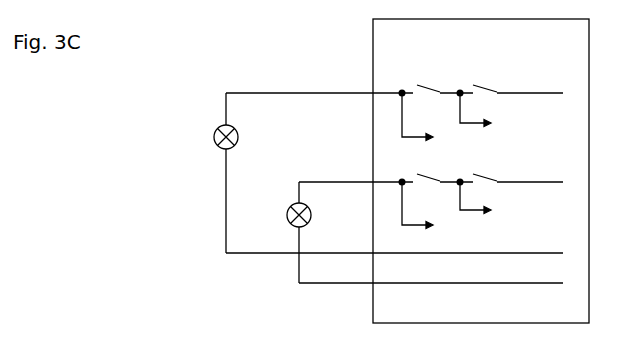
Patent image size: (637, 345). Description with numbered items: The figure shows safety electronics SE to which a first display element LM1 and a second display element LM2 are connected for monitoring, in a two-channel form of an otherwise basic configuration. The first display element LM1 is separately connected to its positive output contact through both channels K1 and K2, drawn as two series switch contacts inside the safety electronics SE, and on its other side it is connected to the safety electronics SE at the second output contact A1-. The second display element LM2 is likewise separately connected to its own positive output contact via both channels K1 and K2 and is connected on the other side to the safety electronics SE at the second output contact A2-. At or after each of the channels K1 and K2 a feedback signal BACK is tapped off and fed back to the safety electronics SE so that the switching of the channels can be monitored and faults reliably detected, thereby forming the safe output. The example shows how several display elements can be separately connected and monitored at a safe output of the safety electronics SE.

The safety electronics SE is at (481, 171).
The first display element LM1 is at (204, 173).
The second display element LM2 is at (276, 232).
The first channel K1 is at (440, 125).
The second channel K2 is at (511, 123).
The second output contact A1- is at (394, 266).
The second output contact A2- is at (431, 296).
The feedback signal BACK is at (470, 166).